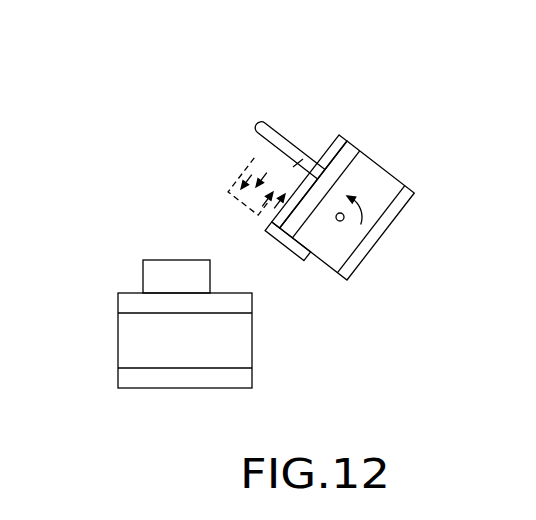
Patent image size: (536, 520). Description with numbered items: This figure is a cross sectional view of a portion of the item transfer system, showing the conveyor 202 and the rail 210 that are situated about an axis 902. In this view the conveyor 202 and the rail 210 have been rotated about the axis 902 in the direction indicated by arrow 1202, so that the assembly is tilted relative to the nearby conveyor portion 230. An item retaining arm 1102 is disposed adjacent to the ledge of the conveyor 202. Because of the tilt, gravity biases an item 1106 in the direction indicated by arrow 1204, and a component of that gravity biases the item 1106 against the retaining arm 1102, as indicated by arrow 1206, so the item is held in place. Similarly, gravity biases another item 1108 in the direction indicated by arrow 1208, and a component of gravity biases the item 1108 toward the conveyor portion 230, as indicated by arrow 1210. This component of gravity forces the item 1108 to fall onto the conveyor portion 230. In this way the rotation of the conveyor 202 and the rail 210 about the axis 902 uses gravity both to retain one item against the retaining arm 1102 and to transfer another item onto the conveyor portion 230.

The conveyor 202 is at (397, 176).
The rail 210 is at (292, 155).
The conveyor portion 230 is at (190, 389).
The axis 902 is at (337, 221).
The item retaining arm 1102 is at (290, 268).
The item 1106 is at (293, 167).
The item 1108 is at (142, 266).
The arrow 1202 is at (362, 224).
The arrow 1204 is at (285, 182).
The arrow 1206 is at (268, 223).
The arrow 1208 is at (258, 178).
The arrow 1210 is at (255, 180).